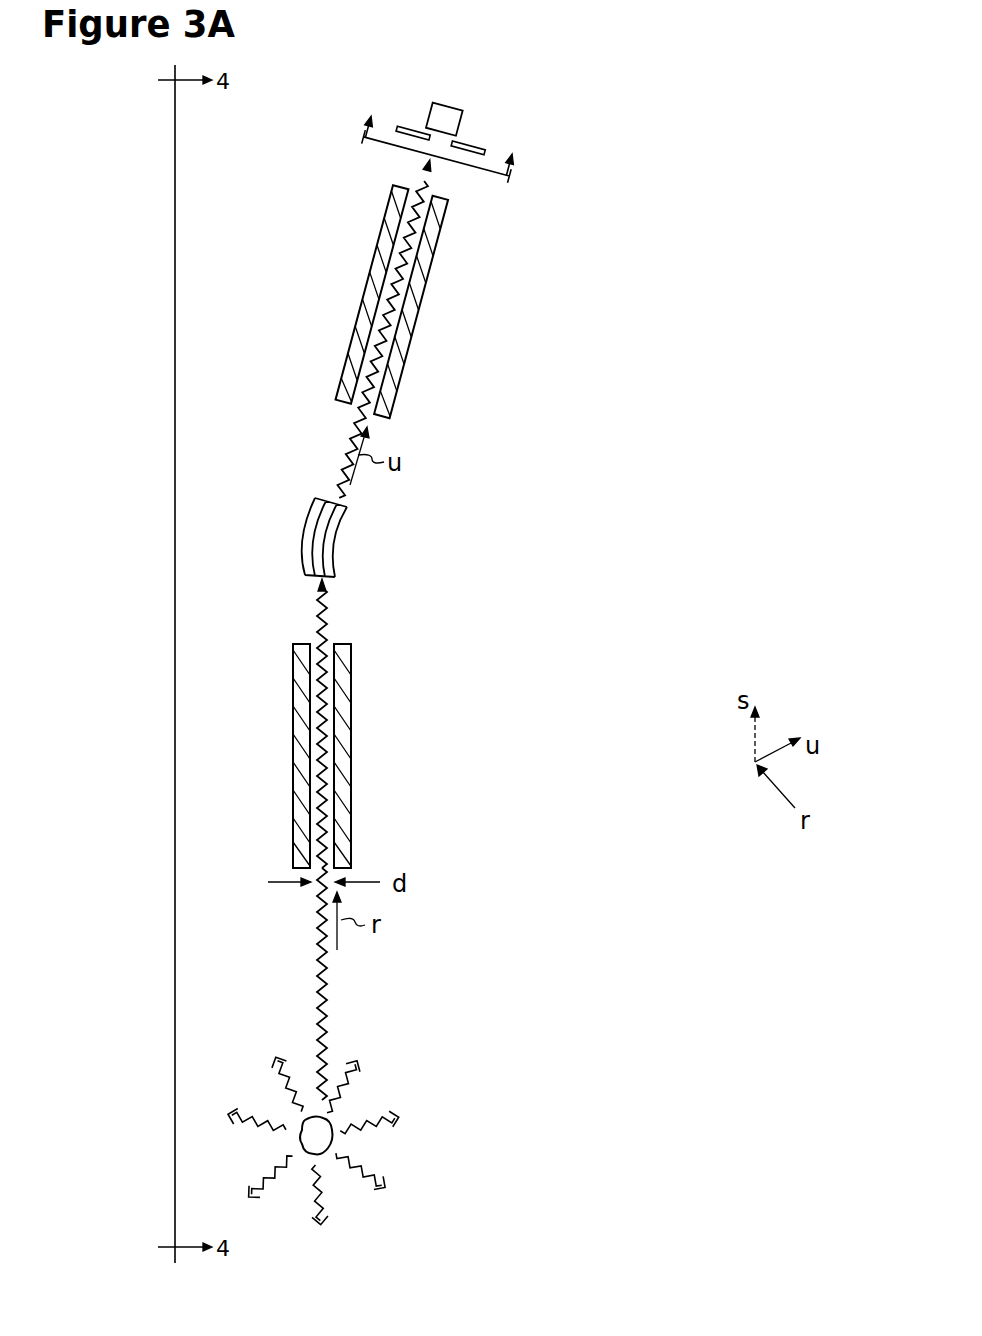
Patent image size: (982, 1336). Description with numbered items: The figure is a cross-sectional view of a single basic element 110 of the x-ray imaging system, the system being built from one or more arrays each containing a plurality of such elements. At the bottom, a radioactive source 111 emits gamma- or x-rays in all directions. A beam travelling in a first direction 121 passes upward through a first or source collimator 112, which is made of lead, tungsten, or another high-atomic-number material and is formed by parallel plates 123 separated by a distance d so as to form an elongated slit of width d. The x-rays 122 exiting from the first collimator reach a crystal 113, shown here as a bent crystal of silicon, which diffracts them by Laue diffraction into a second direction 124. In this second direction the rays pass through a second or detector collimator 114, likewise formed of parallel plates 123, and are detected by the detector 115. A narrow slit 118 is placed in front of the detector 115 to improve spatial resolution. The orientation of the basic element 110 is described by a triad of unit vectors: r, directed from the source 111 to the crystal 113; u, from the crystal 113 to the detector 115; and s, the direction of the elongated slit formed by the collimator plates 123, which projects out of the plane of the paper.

The basic element 110 is at (573, 528).
The radioactive source 111 is at (412, 1118).
The first or source collimator 112 is at (351, 774).
The crystal 113 is at (336, 545).
The second or detector collimator 114 is at (417, 322).
The detector 115 is at (447, 104).
The narrow slit 118 is at (470, 145).
The first direction 121 is at (325, 975).
The x-rays exiting from the first collimator 122 is at (318, 618).
The parallel plates 123 is at (310, 820).
The second direction 124 is at (390, 257).